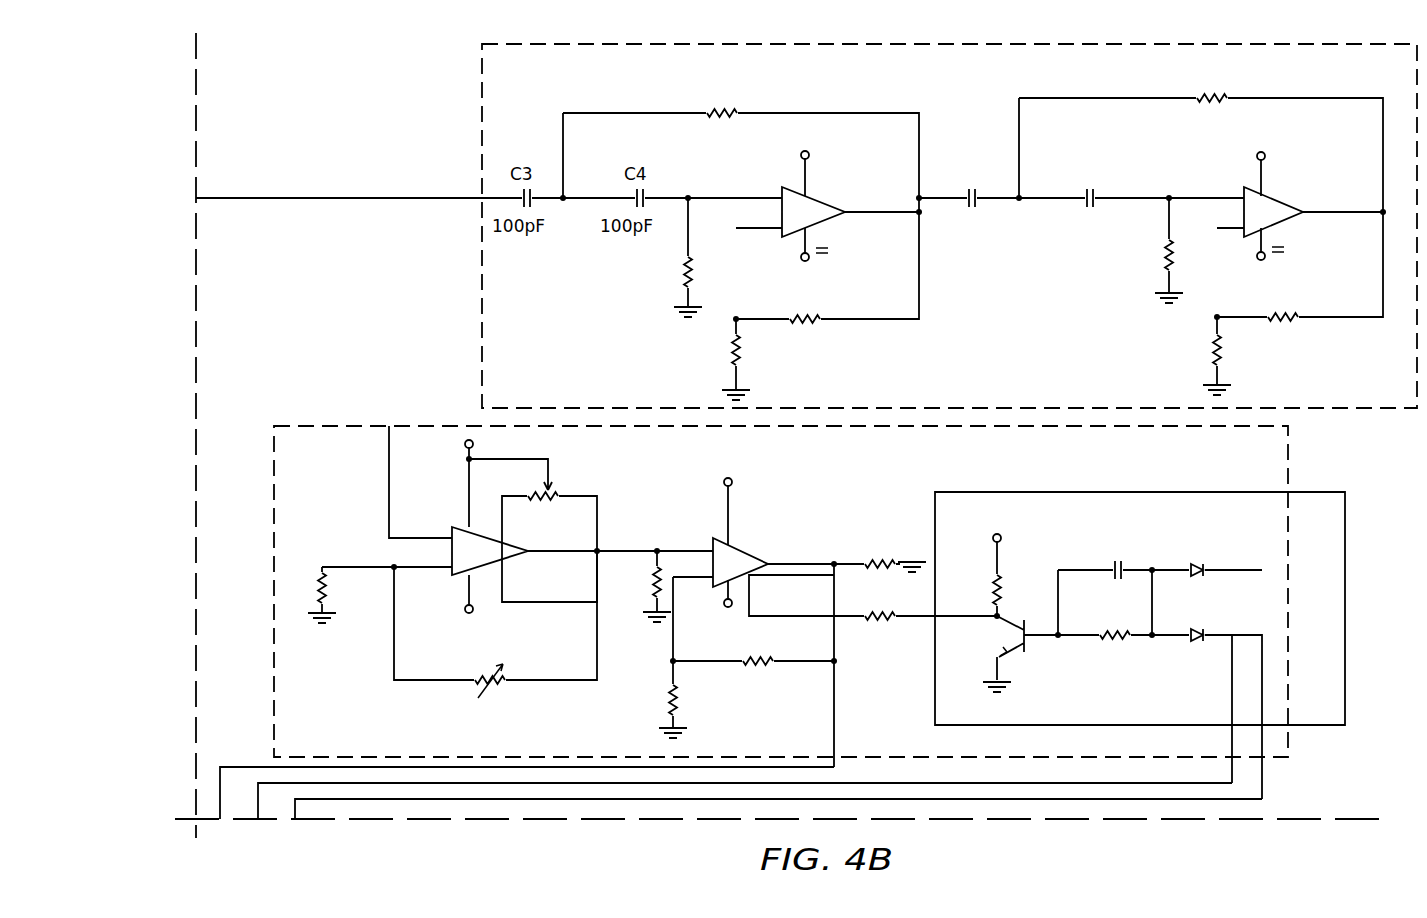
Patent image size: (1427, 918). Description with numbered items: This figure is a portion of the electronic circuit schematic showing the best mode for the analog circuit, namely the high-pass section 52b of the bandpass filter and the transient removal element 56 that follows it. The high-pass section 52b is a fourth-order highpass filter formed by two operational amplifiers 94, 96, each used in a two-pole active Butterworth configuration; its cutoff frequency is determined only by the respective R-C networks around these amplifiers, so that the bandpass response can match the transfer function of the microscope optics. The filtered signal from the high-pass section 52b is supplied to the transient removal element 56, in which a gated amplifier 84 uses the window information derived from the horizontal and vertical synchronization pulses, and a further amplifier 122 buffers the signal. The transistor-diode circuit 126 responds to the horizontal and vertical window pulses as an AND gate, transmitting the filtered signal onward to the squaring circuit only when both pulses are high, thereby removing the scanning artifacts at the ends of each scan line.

The high-pass section 52b is at (949, 226).
The transient removal element 56 is at (833, 612).
The operational amplifier 94 is at (828, 200).
The operational amplifier 96 is at (1290, 200).
The gated amplifier 84 is at (456, 582).
The amplifier 122 is at (713, 535).
The transistor-diode circuit 126 is at (1345, 570).